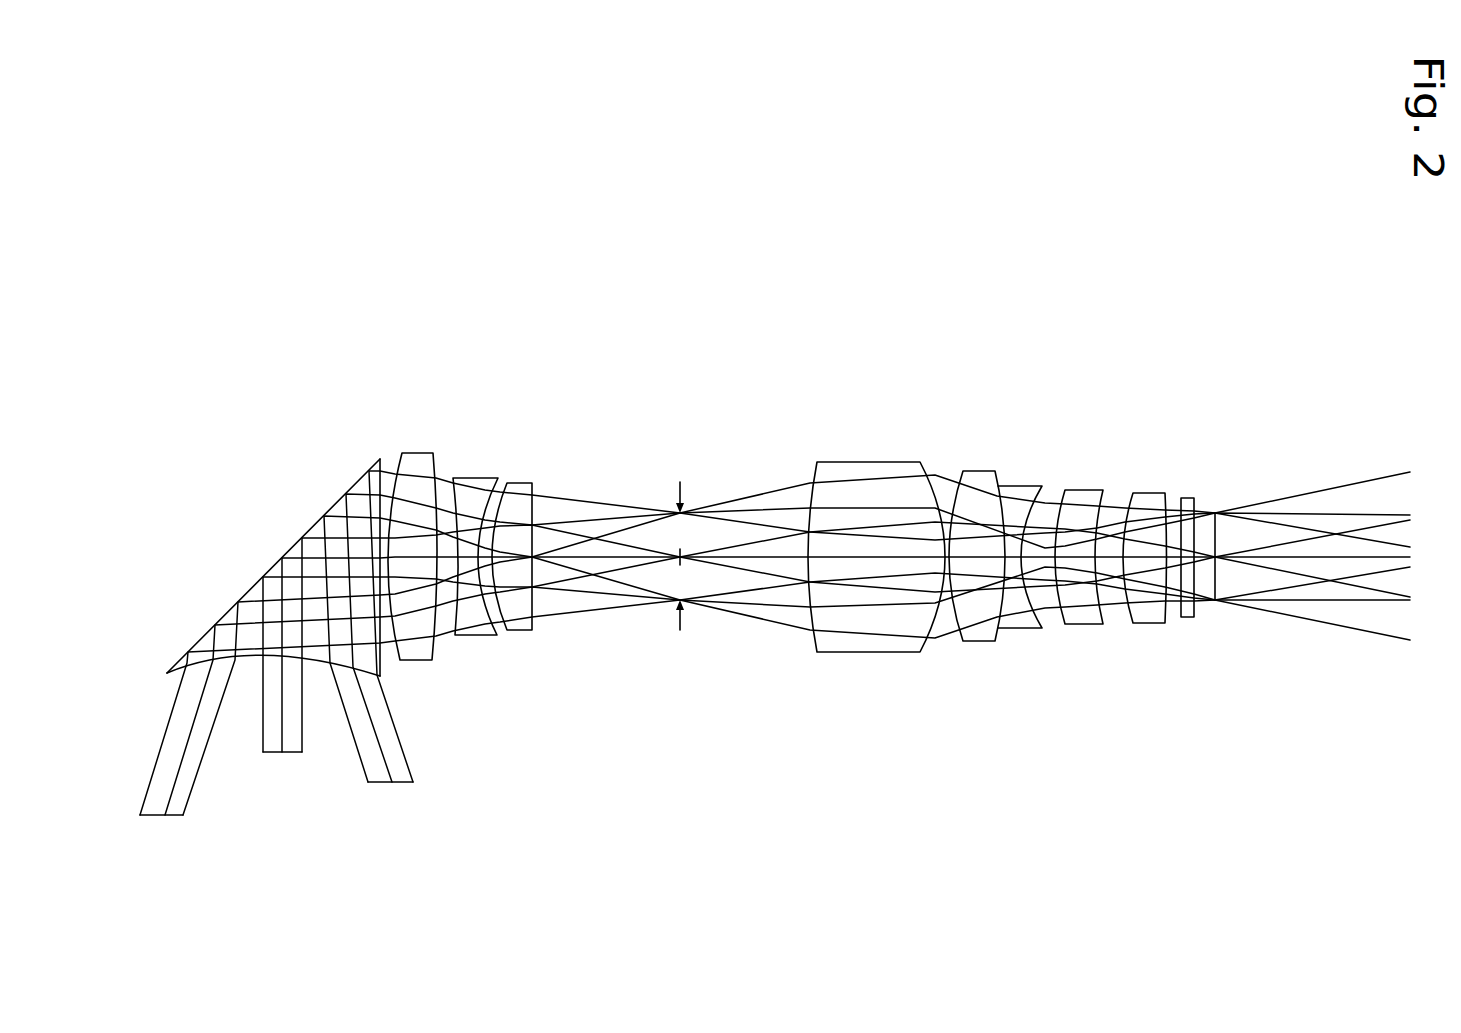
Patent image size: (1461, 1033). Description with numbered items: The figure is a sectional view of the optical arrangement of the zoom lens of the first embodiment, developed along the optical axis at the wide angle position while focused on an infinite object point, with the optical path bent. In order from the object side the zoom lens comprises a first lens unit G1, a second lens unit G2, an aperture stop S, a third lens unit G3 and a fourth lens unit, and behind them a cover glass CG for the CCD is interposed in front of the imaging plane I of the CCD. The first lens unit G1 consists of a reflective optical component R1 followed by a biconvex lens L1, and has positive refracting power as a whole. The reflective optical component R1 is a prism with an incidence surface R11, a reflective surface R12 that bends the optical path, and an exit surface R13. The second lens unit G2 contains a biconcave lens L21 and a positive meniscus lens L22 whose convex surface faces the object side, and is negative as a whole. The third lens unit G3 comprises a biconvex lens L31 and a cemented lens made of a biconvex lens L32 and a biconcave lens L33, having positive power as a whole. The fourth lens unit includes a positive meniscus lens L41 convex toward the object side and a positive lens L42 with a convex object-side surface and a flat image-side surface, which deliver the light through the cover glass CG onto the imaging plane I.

The first lens unit G1 is at (438, 352).
The second lens unit G2 is at (565, 352).
The third lens unit G3 is at (1042, 352).
The reflective optical component R1 is at (278, 580).
The incidence surface R11 is at (247, 660).
The reflective surface R12 is at (287, 548).
The exit surface R13 is at (383, 487).
The biconvex lens L1 is at (413, 451).
The biconcave lens L21 is at (470, 475).
The positive meniscus lens L22 is at (517, 481).
The biconvex lens L31 is at (885, 460).
The biconvex lens L32 is at (975, 469).
The biconcave lens L33 is at (1020, 484).
The positive meniscus lens L41 is at (1078, 488).
The positive lens L42 is at (1150, 491).
The aperture stop S is at (680, 481).
The cover glass CG is at (1188, 496).
The imaging plane I is at (1219, 538).